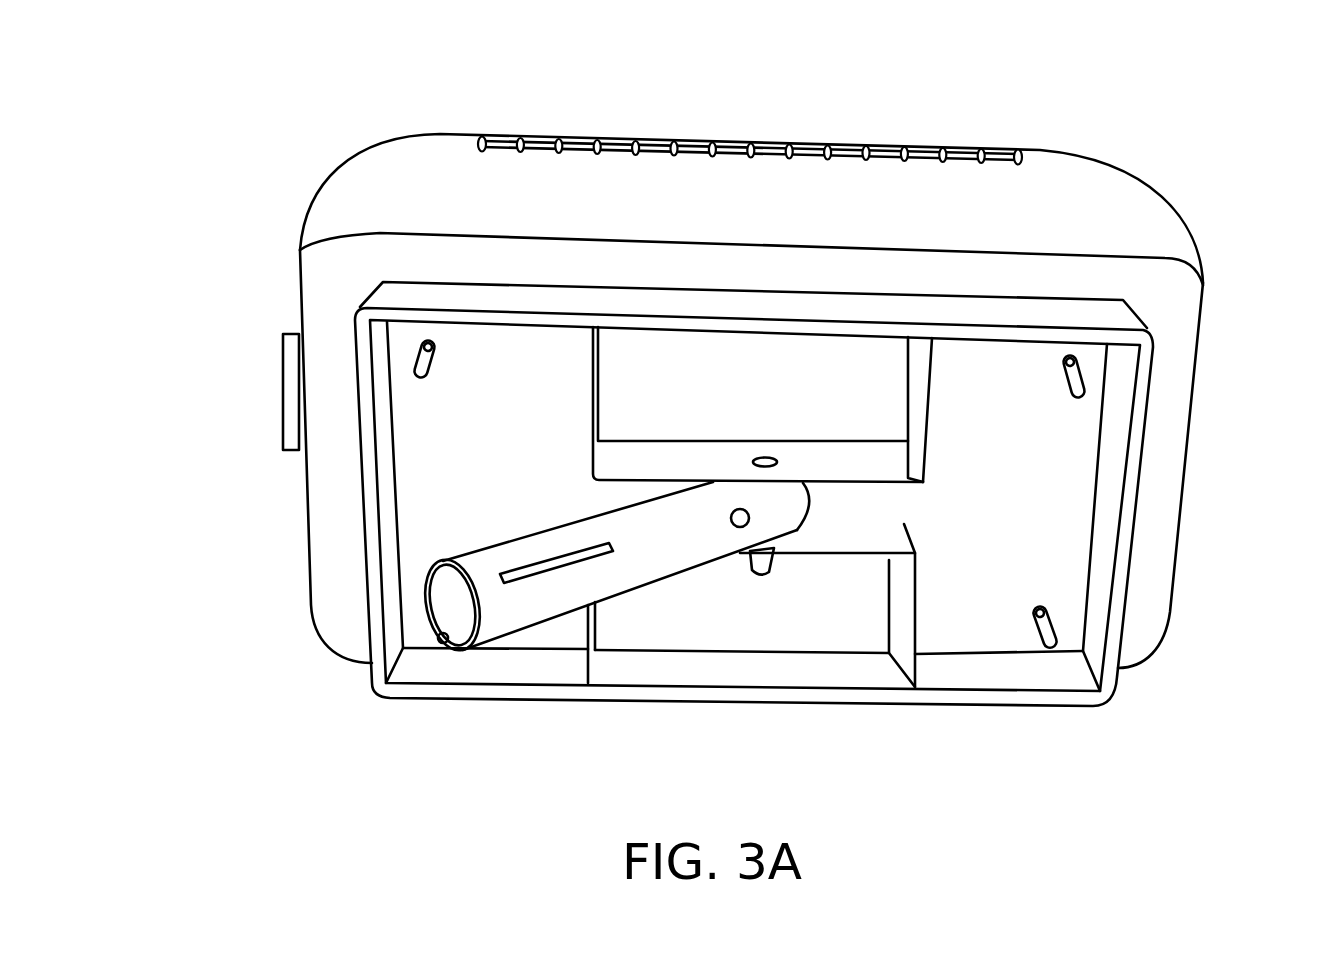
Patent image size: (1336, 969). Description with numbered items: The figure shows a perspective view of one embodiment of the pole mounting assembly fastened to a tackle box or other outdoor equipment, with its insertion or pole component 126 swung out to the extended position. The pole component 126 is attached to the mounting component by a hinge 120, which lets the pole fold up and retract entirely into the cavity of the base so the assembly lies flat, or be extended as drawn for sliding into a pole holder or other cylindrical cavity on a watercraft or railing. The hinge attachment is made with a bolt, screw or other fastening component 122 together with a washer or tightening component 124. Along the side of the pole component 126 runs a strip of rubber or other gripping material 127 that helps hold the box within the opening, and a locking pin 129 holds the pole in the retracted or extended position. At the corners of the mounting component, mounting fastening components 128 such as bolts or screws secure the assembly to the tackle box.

The hinge 120 is at (771, 585).
The fastening component 122 is at (766, 458).
The tightening component 124 is at (748, 549).
The pole component 126 is at (500, 608).
The gripping material 127 is at (437, 560).
The mounting fastening components 128 is at (422, 372).
The locking pin 129 is at (742, 517).